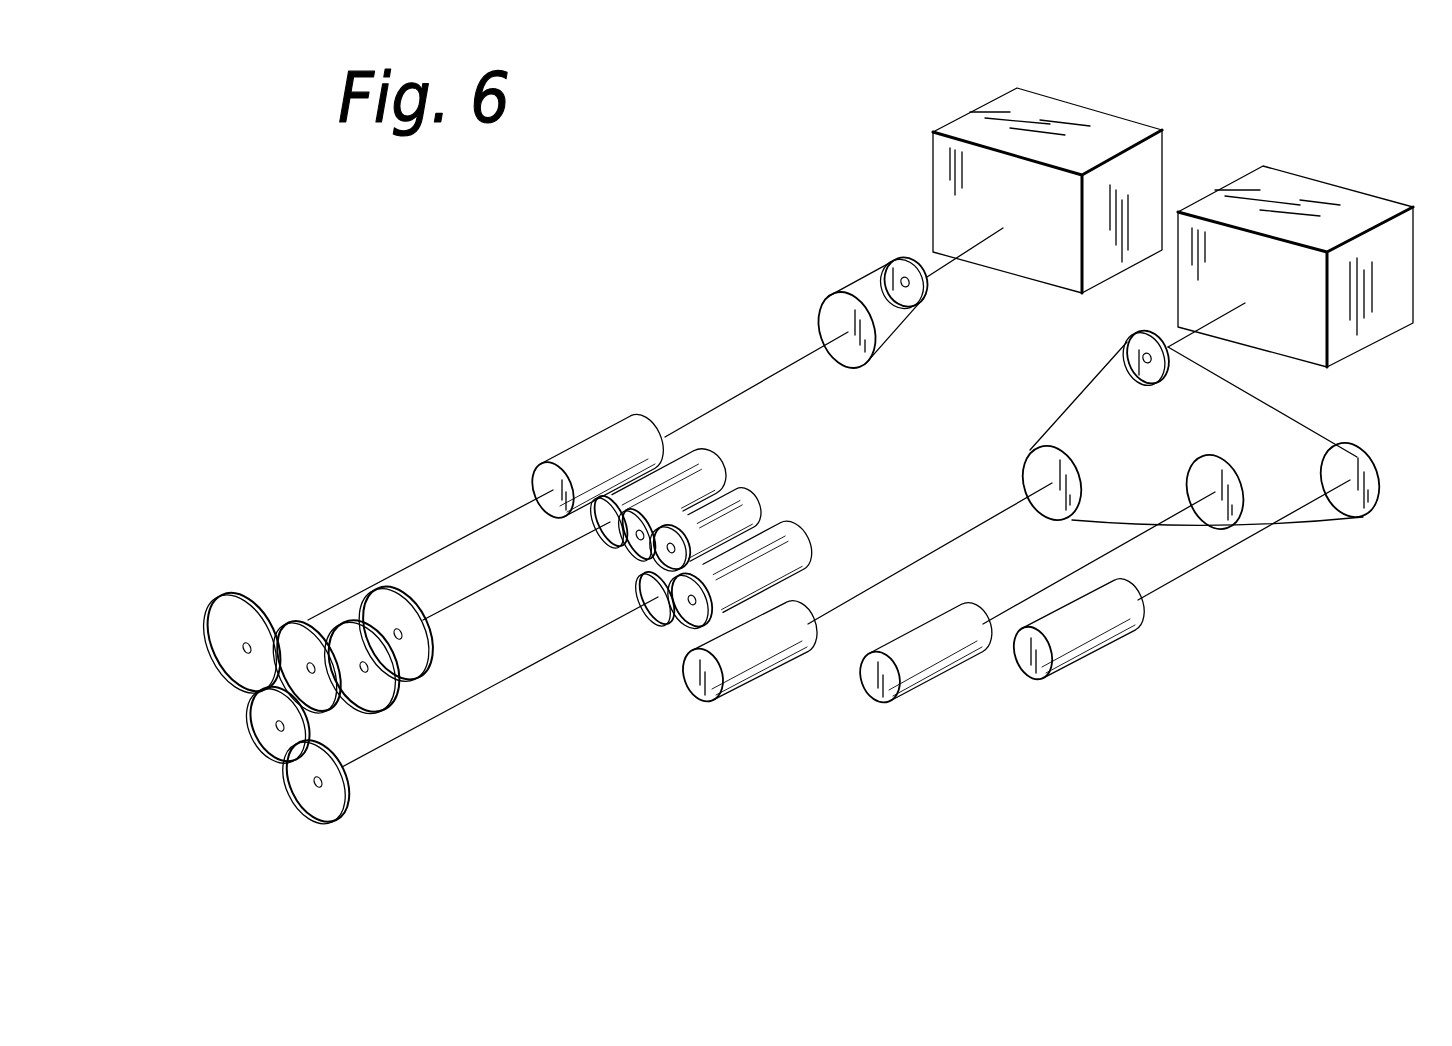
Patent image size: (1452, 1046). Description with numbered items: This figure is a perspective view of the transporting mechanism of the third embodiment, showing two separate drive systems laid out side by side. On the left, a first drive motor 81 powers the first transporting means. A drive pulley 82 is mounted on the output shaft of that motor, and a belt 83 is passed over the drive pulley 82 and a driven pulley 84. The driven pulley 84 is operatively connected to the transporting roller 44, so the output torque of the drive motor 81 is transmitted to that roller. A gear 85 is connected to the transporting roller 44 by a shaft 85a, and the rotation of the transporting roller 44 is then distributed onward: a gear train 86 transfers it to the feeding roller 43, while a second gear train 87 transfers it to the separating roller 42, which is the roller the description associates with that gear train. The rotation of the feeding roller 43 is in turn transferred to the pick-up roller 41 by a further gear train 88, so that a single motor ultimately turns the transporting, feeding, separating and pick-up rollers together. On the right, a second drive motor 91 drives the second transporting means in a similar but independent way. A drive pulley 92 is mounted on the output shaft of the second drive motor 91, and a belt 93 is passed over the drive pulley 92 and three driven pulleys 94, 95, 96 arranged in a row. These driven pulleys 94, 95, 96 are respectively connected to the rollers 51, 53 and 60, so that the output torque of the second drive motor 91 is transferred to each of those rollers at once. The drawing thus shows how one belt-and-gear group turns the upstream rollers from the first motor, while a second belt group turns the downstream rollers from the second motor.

The drive motor 81 is at (1085, 120).
The second drive motor 91 is at (1305, 190).
The drive pulley 82 is at (900, 268).
The belt 83 is at (857, 277).
The driven pulley 84 is at (832, 318).
The gear 85 is at (252, 627).
The shaft 85a is at (423, 557).
The gear train 86 is at (358, 719).
The gear train 87 is at (246, 729).
The gear train 88 is at (636, 496).
The transporting roller 44 is at (585, 458).
The feeding roller 43 is at (697, 467).
The pick-up roller 41 is at (745, 497).
The lens barrel 42 is at (783, 540).
The roller 51 is at (737, 653).
The roller 53 is at (930, 653).
The roller 60 is at (1110, 612).
The drive pulley 92 is at (1132, 347).
The belt 93 is at (1303, 415).
The driven pulley 94 is at (1082, 480).
The driven pulley 95 is at (1233, 468).
The driven pulley 96 is at (1385, 485).